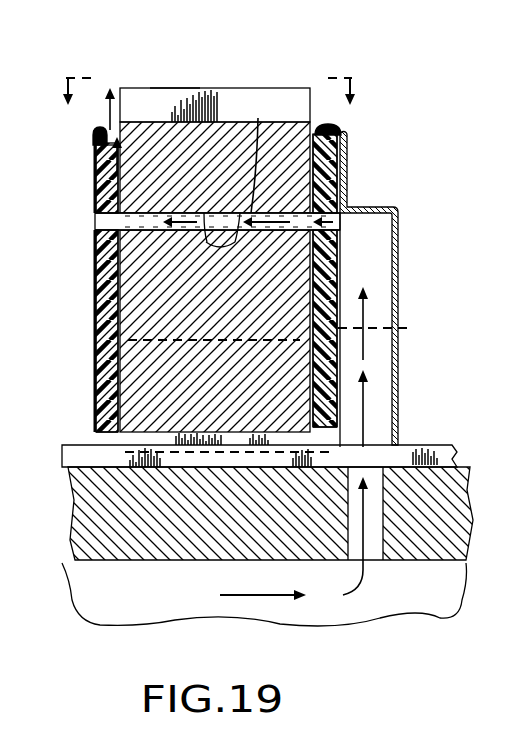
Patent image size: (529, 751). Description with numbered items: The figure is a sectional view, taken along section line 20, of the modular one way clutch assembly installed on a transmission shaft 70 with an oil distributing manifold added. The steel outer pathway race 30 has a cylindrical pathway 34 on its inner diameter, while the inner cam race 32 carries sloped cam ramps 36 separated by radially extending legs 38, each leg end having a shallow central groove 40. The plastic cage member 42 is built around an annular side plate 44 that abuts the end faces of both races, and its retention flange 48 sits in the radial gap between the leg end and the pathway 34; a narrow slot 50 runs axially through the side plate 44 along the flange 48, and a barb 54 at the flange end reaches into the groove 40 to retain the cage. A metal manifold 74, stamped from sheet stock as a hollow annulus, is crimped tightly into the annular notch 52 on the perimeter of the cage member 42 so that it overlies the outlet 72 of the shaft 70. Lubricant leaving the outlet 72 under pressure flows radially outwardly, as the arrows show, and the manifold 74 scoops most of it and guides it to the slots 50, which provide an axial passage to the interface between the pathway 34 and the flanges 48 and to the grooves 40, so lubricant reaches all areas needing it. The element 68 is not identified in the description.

The section line 20- 20 is at (205, 64).
The outer pathway race 30 is at (177, 77).
The upper block 68 is at (231, 63).
The cylindrical pathway 34 is at (254, 153).
The shallow groove 40 is at (222, 204).
The radially extending leg 38 is at (167, 291).
The sloped cam ramp 36 is at (287, 330).
The annular side plate 44 is at (97, 262).
The retention flange 48 is at (97, 221).
The barb 54 is at (236, 242).
The cage member 42 is at (88, 391).
The annular notch 52 is at (100, 128).
The slot 50 is at (94, 213).
The metal manifold 74 is at (398, 228).
The inner cam race 32 is at (108, 440).
The transmission shaft 70 is at (480, 503).
The shaft outlet 72 is at (383, 500).